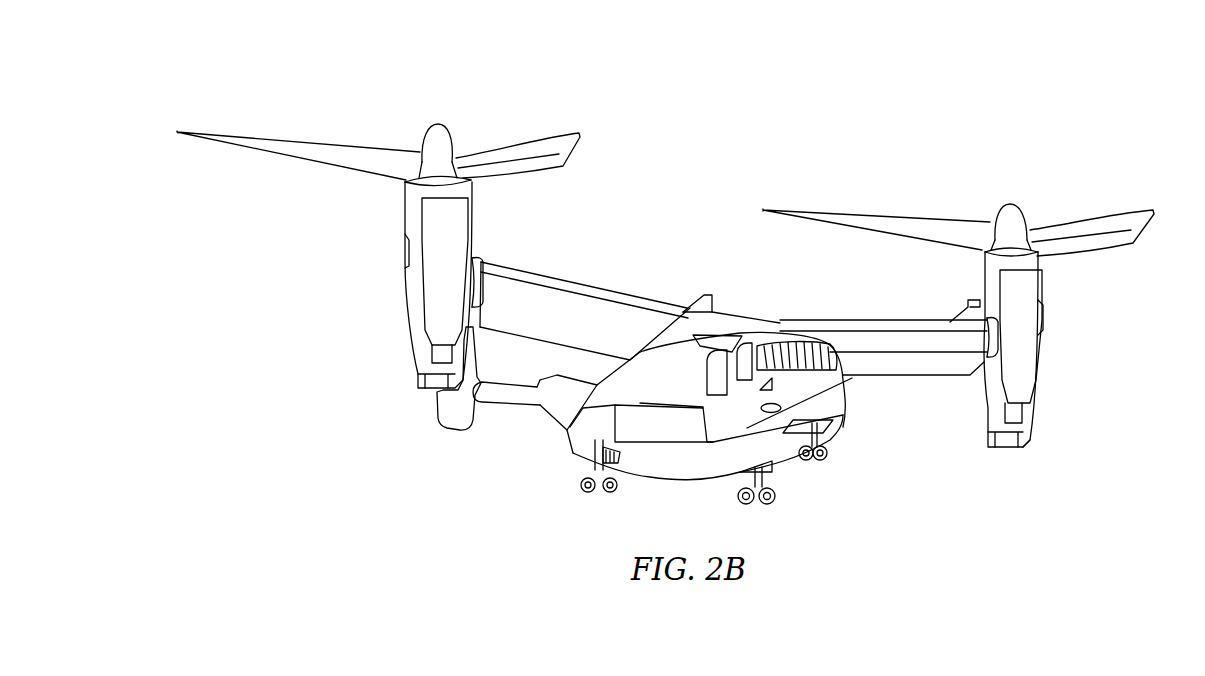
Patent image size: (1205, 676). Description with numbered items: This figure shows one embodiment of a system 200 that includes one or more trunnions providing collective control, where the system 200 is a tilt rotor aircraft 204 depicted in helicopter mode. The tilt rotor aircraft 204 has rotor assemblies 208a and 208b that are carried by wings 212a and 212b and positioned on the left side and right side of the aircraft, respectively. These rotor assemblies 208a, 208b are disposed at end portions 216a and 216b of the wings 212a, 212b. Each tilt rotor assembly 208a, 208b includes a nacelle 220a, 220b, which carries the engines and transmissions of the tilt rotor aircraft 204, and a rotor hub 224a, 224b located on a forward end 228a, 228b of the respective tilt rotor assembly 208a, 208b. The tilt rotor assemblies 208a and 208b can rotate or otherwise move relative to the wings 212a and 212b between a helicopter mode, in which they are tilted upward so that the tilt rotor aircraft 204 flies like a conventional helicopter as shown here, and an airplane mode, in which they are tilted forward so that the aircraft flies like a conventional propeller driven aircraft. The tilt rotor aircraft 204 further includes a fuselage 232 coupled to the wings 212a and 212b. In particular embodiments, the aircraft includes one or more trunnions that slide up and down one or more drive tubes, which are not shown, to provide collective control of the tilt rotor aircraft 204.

The system 200 is at (860, 68).
The tilt rotor aircraft 204 is at (838, 442).
The rotor assembly 208a is at (1072, 372).
The rotor assembly 208b is at (376, 294).
The wing 212a is at (872, 320).
The wing 212b is at (589, 282).
The end portion 216a is at (966, 399).
The end portion 216b is at (522, 224).
The nacelle 220a is at (1030, 426).
The nacelle 220b is at (418, 378).
The rotor hub 224a is at (1028, 214).
The rotor hub 224b is at (428, 140).
The forward end 228a is at (1036, 264).
The forward end 228b is at (403, 182).
The fuselage 232 is at (681, 477).